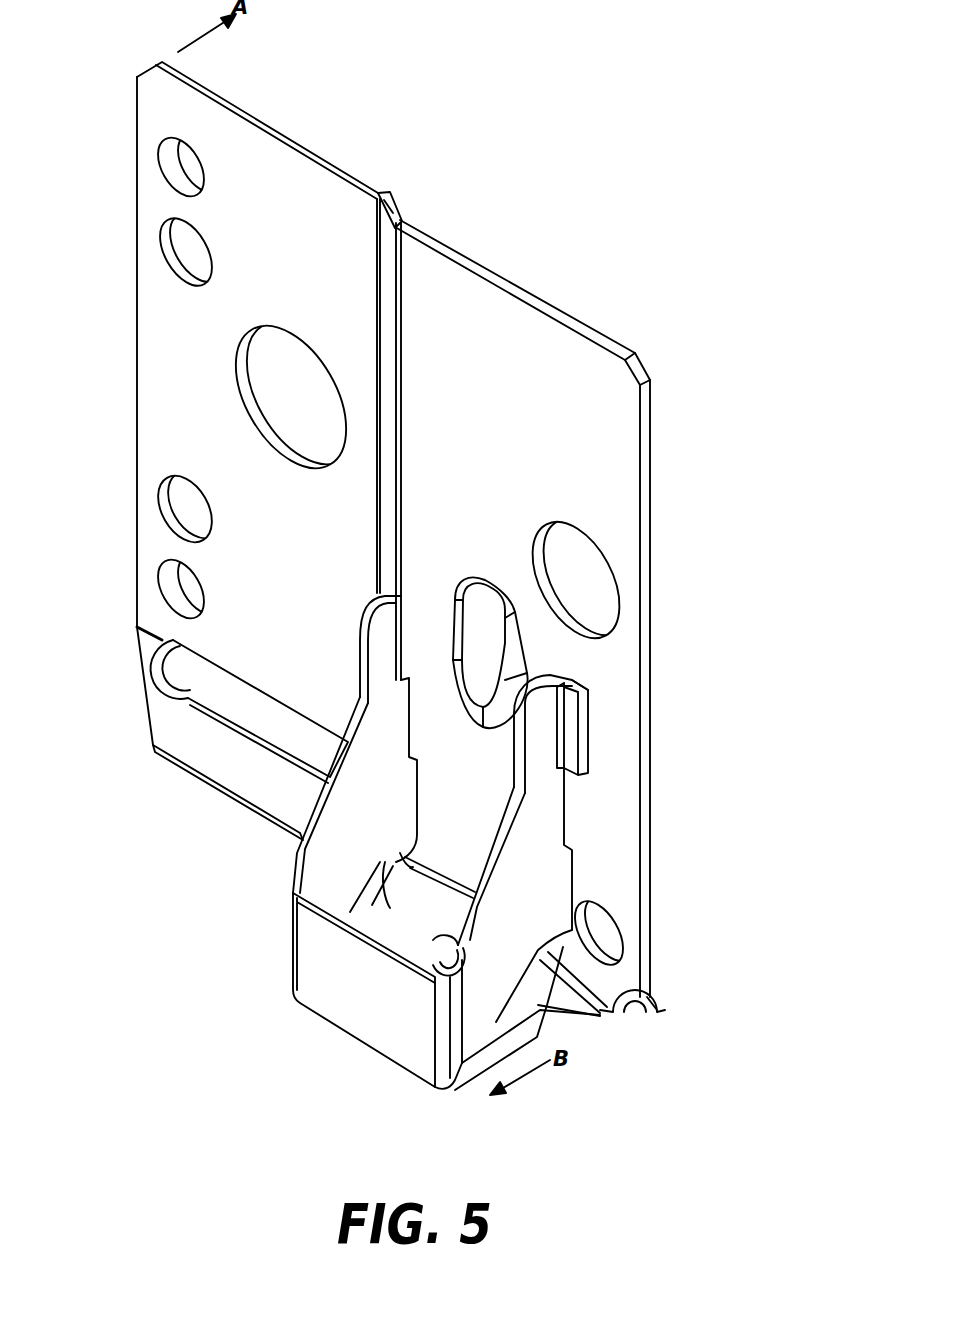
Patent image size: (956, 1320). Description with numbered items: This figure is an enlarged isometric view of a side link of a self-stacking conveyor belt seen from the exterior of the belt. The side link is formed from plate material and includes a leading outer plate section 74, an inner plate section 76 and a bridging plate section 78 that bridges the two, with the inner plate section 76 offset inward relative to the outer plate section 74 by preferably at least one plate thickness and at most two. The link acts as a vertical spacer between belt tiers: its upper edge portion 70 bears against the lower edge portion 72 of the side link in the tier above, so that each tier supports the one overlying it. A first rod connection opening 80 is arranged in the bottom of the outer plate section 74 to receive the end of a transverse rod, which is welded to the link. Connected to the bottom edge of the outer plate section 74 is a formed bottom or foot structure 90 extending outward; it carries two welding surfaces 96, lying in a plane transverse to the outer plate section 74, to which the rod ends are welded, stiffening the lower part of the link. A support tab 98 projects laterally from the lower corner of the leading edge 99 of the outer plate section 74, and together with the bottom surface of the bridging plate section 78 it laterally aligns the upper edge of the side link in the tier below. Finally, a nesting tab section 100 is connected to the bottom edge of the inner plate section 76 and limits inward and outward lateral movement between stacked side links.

The upper edge portion 70 is at (383, 185).
The lower edge portion 72 is at (597, 1010).
The leading outer plate section 74 is at (528, 335).
The inner plate section 76 is at (272, 178).
The bridging plate section 78 is at (410, 214).
The first rod connection opening 80 is at (598, 930).
The bottom or foot structure 90 is at (367, 1022).
The welding surfaces 96 is at (342, 817).
The support tab 98 is at (660, 1005).
The leading edge 99 is at (641, 540).
The nesting tab section 100 is at (192, 745).